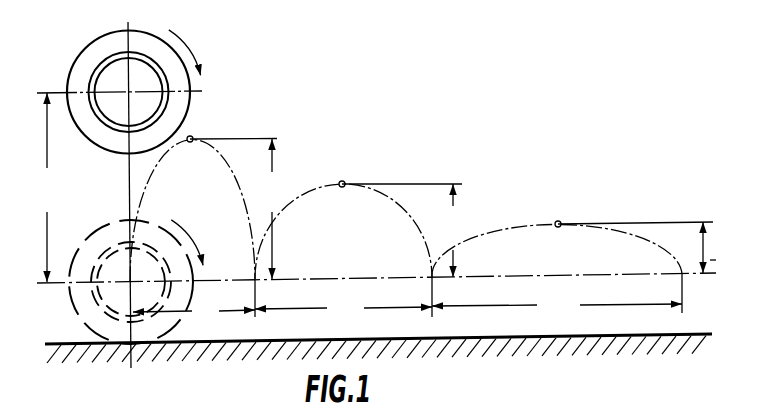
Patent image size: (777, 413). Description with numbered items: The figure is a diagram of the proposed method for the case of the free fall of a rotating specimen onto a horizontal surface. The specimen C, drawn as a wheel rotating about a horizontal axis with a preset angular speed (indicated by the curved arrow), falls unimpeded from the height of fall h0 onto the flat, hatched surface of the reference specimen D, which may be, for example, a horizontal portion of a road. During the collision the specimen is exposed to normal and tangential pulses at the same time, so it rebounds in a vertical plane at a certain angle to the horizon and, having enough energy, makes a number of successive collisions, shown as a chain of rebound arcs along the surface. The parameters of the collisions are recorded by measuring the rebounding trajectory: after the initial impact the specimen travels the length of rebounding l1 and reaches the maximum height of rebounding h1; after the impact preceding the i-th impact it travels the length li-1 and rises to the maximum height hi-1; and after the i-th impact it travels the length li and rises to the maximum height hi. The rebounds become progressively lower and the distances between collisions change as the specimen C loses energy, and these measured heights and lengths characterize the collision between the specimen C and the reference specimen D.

The specimen C is at (172, 110).
The reference specimen D is at (453, 340).
The height of fall h0 is at (49, 187).
The maximum height of rebounding after the initial impact h1 is at (240, 209).
The maximum height of rebounding after the impact preceding the i-impact hi-1 is at (412, 230).
The maximum height of rebounding after the i-impact hi is at (702, 240).
The length of rebounding after the initial impact l1 is at (194, 312).
The length of rebounding after the impact preceding the i-impact li-1 is at (343, 310).
The length of rebounding after the i-impact li is at (557, 307).